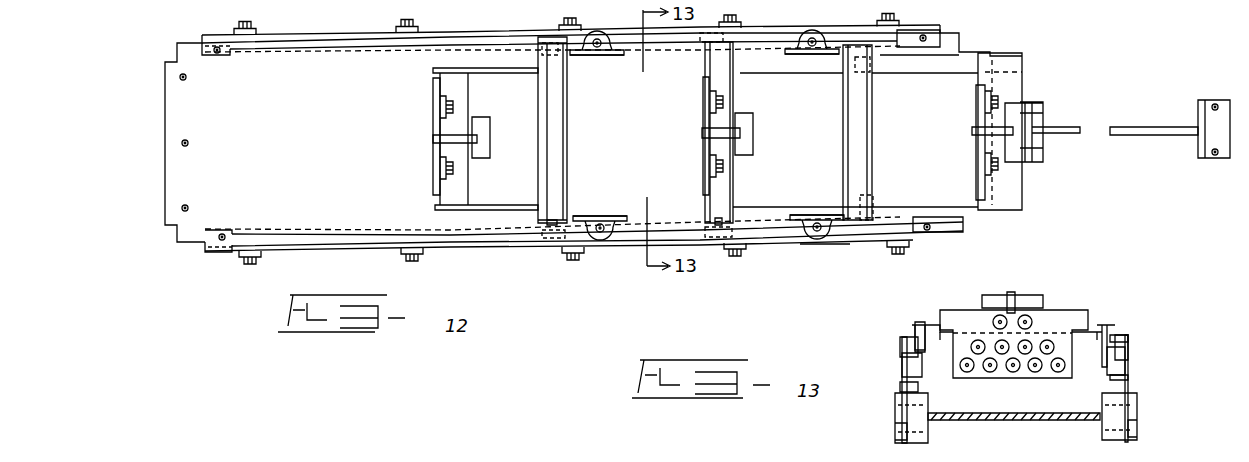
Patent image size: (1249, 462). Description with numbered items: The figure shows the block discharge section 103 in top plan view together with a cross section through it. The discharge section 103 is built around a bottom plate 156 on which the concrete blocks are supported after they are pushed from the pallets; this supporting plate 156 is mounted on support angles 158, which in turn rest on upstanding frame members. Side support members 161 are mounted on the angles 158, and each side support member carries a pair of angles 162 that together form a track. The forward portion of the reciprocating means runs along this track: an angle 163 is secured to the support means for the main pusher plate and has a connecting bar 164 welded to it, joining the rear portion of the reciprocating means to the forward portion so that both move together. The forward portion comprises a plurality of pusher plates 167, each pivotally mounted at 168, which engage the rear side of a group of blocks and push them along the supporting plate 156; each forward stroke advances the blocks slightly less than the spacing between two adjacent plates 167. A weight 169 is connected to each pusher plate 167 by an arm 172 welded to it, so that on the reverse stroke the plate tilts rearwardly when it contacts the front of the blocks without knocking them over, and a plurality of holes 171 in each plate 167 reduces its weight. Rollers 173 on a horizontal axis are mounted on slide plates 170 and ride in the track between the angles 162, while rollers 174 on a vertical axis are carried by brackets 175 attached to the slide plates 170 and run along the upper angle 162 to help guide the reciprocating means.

In FIG. 12, the block discharge section 103 is at (830, 252).
In FIG. 12, the bottom plate 156 is at (330, 158).
In FIG. 13, the bottom plate 156 is at (1000, 418).
In FIG. 12, the support angles 158 is at (208, 38).
In FIG. 13, the support angles 158 is at (907, 439).
In FIG. 12, the side support members 161 is at (409, 32).
In FIG. 13, the side support members 161 is at (900, 340).
In FIG. 12, the angles 162 is at (280, 40).
In FIG. 13, the angles 162 is at (905, 348).
In FIG. 12, the angle 163 is at (1230, 124).
In FIG. 12, the connecting bar 164 is at (1125, 128).
In FIG. 12, the pusher plates 167 is at (435, 128).
In FIG. 13, the pusher plates 167 is at (1041, 372).
In FIG. 12, the pivot mounting 168 is at (456, 103).
In FIG. 12, the weight 169 is at (487, 130).
In FIG. 13, the weight 169 is at (1043, 302).
In FIG. 12, the slide plates 170 is at (638, 53).
In FIG. 13, the slide plates 170 is at (942, 378).
In FIG. 13, the holes 171 is at (966, 366).
In FIG. 12, the arms 172 is at (433, 140).
In FIG. 13, the arms 172 is at (1013, 292).
In FIG. 12, the rollers 173 is at (699, 54).
In FIG. 13, the rollers 173 is at (905, 366).
In FIG. 12, the rollers 174 is at (612, 20).
In FIG. 13, the rollers 174 is at (915, 330).
In FIG. 12, the brackets 175 is at (795, 54).
In FIG. 13, the brackets 175 is at (923, 322).